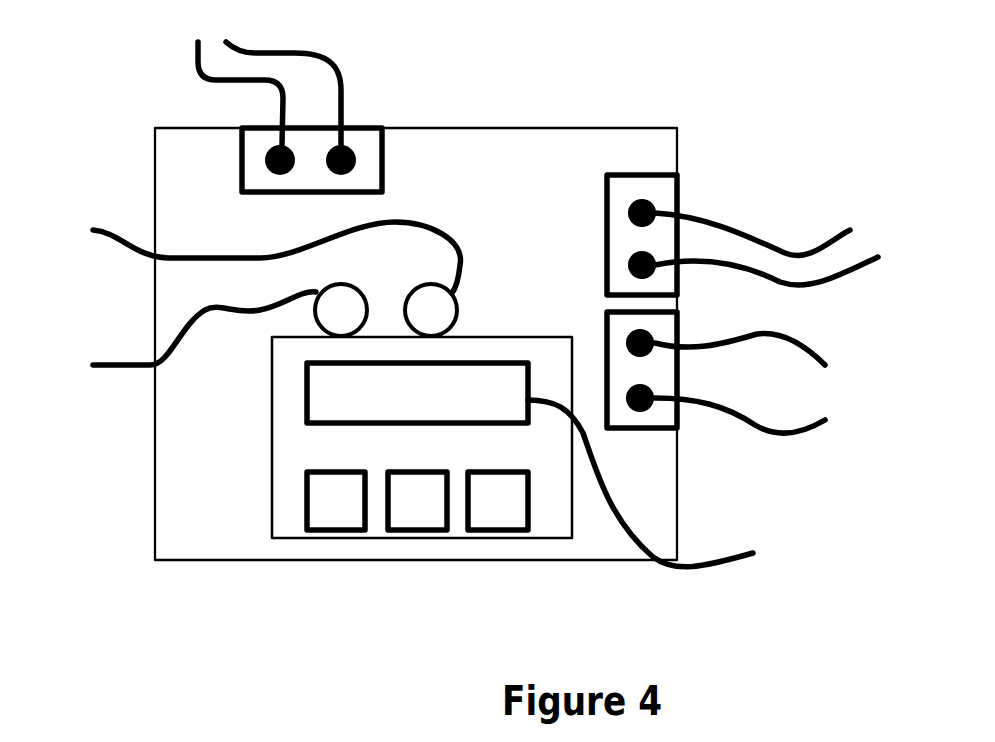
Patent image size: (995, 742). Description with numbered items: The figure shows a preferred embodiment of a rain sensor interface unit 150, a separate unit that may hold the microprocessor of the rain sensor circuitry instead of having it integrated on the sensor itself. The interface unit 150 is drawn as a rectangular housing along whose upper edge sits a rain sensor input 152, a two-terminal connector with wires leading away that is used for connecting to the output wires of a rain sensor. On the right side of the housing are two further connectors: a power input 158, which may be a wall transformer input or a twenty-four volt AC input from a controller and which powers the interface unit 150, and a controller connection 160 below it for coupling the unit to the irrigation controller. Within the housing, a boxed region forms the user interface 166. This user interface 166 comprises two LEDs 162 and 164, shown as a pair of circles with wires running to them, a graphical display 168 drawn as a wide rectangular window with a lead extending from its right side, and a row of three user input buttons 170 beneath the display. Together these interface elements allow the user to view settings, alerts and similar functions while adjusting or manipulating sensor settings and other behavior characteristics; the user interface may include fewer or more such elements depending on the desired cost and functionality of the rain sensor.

The rain sensor interface unit 150 is at (190, 593).
The rain sensor input 152 is at (278, 96).
The power input 158 is at (762, 235).
The controller connection 160 is at (742, 372).
The LED 162 is at (242, 274).
The LED 164 is at (192, 332).
The user interface 166 is at (213, 455).
The graphical display 168 is at (565, 471).
The user input buttons 170 is at (423, 527).